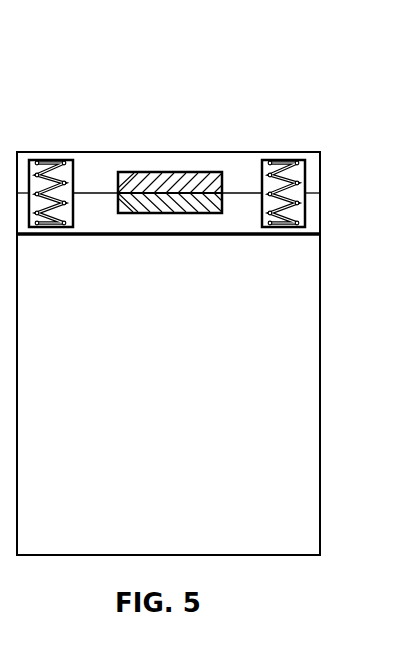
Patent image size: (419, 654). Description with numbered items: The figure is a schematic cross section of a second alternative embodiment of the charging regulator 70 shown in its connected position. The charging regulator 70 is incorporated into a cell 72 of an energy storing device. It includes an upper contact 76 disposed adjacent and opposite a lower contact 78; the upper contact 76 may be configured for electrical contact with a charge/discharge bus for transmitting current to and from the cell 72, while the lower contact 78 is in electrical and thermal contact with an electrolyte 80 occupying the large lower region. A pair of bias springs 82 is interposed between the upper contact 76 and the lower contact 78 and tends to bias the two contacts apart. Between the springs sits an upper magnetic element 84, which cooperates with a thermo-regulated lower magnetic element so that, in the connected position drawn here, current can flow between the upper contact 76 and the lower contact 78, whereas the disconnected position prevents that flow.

The charging regulator 70 is at (321, 207).
The cell 72 is at (155, 86).
The upper contact 76 is at (213, 152).
The lower contact 78 is at (193, 236).
The electrolyte 80 is at (165, 360).
The bias springs 82 is at (43, 160).
The upper magnetic element 84 is at (157, 172).